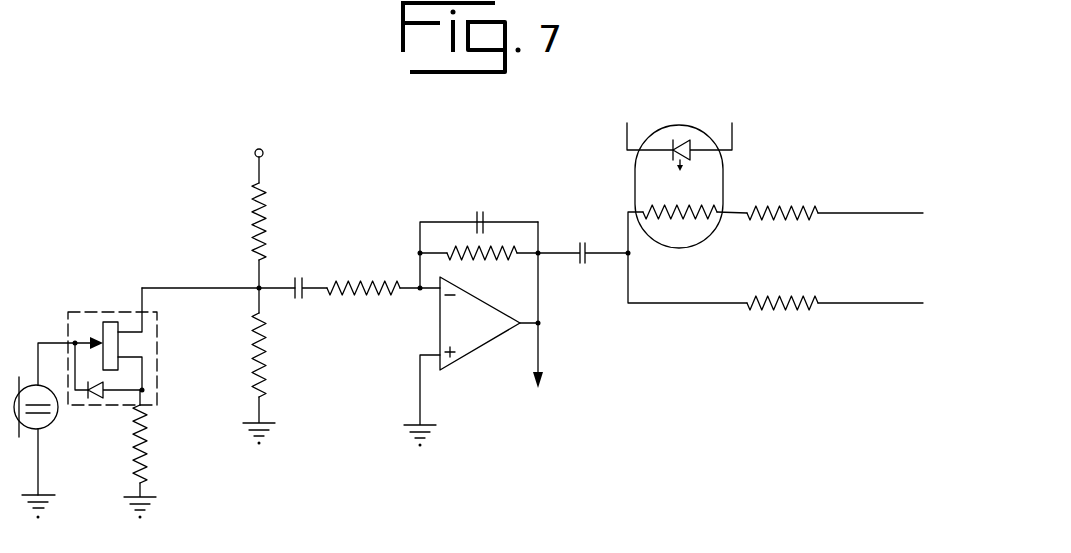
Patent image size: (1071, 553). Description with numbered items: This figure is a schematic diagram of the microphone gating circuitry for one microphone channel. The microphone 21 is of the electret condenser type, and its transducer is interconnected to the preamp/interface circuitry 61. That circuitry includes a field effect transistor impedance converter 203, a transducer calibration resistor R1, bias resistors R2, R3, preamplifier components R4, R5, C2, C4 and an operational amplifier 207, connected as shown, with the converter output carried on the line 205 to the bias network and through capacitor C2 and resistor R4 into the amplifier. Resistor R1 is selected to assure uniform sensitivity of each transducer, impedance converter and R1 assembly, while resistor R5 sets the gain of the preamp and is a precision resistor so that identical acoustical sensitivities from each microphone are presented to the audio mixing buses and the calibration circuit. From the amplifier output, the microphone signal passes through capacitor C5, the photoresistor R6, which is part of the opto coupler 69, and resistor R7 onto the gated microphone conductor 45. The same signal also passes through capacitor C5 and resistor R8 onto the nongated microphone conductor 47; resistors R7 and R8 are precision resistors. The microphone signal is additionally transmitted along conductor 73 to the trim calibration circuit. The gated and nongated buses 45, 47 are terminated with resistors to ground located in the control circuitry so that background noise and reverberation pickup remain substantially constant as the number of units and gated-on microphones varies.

The microphone 21 is at (34, 386).
The field effect transistor impedance converter 203 is at (100, 312).
The signal line 205 is at (200, 288).
The preamp/interface circuitry 61 is at (366, 234).
The operational amplifier 207 is at (475, 342).
The conductor 73 is at (542, 363).
The opto coupler 69 is at (723, 168).
The gated microphone conductor 45 is at (848, 213).
The nongated microphone conductor 47 is at (888, 305).
The transducer calibration resistor R1 is at (150, 454).
The bias resistor R2 is at (276, 218).
The bias resistor R3 is at (271, 366).
The preamplifier component resistor R4 is at (363, 300).
The preamplifier gain resistor R5 is at (479, 264).
The photoresistor R6 is at (695, 199).
The resistor R7 is at (782, 202).
The resistor R8 is at (723, 295).
The preamplifier component capacitor C2 is at (306, 274).
The preamplifier component capacitor C4 is at (478, 207).
The capacitor C5 is at (584, 240).